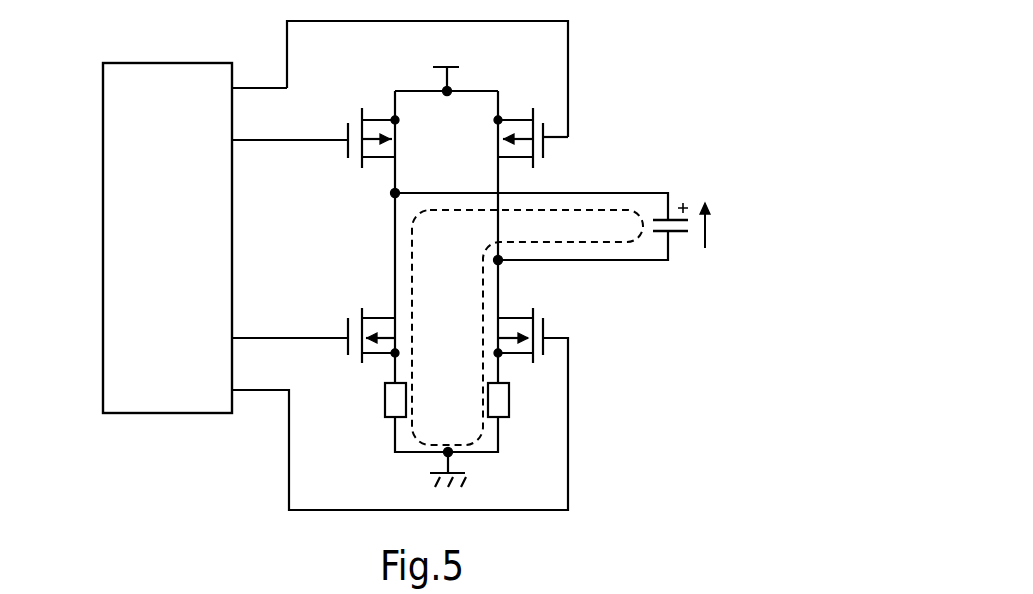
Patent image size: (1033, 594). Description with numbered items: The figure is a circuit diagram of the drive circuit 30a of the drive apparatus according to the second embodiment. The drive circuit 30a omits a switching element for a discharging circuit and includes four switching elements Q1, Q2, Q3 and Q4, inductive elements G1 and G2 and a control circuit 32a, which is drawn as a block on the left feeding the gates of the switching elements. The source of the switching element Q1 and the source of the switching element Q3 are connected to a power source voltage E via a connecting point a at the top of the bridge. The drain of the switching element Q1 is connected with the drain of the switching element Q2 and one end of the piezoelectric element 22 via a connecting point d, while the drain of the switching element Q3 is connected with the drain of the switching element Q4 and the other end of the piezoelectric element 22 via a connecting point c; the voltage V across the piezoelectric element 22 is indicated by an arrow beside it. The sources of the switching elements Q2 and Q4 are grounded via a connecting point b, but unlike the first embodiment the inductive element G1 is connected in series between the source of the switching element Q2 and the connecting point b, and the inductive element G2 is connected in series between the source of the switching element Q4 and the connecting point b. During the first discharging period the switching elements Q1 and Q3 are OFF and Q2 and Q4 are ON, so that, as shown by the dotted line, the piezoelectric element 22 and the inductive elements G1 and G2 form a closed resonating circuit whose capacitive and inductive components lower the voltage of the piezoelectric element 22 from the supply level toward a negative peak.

The control circuit 32a is at (169, 62).
The drive circuit 30a is at (643, 73).
The switching element Q1 is at (538, 105).
The switching element Q2 is at (540, 366).
The switching element Q3 is at (356, 105).
The switching element Q4 is at (359, 366).
The inductive element G1 is at (510, 400).
The inductive element G2 is at (385, 400).
The piezoelectric element 22 is at (685, 245).
The power source voltage E is at (446, 64).
The voltage V is at (715, 225).
The connecting point a is at (446, 104).
The connecting point b is at (447, 440).
The connecting point c is at (387, 193).
The connecting point d is at (490, 261).